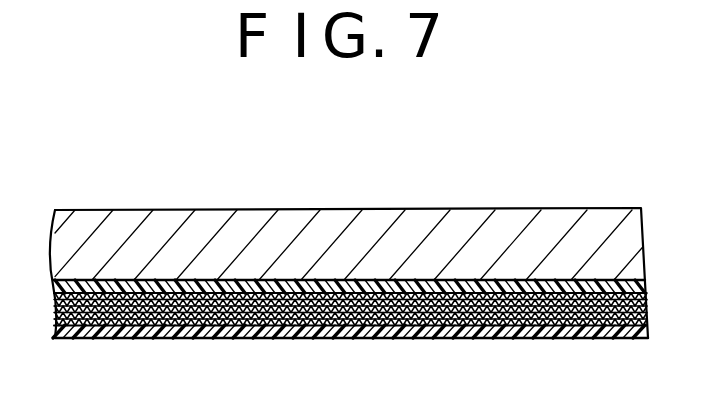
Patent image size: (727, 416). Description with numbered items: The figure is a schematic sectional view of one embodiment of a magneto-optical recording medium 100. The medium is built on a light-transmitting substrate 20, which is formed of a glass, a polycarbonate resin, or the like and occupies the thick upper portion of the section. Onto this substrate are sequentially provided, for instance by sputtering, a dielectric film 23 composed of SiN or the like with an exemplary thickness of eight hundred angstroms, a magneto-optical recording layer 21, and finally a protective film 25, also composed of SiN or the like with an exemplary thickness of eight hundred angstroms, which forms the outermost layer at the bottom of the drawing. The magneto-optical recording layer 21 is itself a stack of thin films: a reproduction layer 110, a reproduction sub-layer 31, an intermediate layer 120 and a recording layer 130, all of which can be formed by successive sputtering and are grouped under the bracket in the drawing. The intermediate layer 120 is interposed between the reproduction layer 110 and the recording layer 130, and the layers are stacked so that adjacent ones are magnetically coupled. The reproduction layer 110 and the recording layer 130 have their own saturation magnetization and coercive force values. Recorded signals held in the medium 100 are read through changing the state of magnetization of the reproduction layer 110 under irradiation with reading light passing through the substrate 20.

The magneto-optical recording medium 100 is at (246, 211).
The light-transmitting substrate 20 is at (125, 229).
The magneto-optical recording layer 21 is at (395, 151).
The reproduction layer 110 is at (418, 297).
The intermediate layer 120 is at (480, 307).
The recording layer 130 is at (557, 316).
The dielectric film 23 is at (98, 289).
The reproduction sub-layer 31 is at (192, 305).
The protective film 25 is at (518, 330).